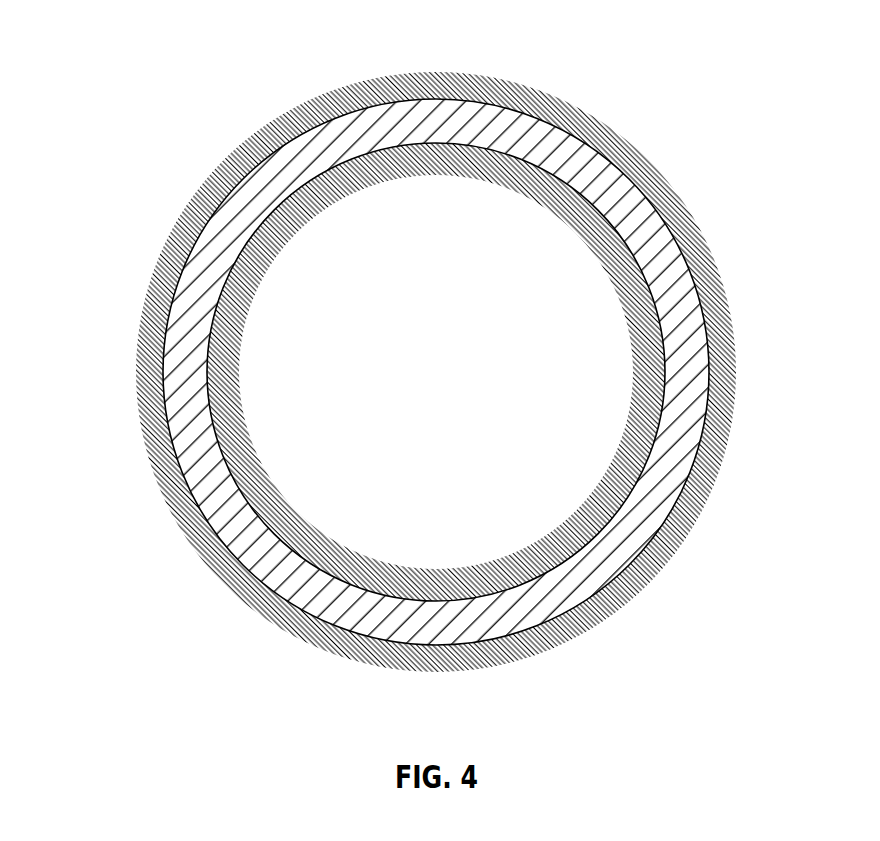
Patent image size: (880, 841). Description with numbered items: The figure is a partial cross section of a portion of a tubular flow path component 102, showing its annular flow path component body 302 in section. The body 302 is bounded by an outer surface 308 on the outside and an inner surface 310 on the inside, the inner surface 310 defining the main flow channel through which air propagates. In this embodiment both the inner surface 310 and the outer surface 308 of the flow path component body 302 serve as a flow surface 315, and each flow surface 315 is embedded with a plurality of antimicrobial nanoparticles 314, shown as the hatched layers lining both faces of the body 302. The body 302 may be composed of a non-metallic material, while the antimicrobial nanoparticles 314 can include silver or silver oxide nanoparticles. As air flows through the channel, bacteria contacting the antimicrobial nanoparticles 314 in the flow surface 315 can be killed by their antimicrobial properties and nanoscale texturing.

The flow path component 102 is at (409, 344).
The flow path component body 302 is at (565, 148).
The outer surface 308 is at (443, 97).
The inner surface 310 is at (215, 445).
The antimicrobial nanoparticles 314 is at (692, 215).
The flow surface 315 is at (125, 256).